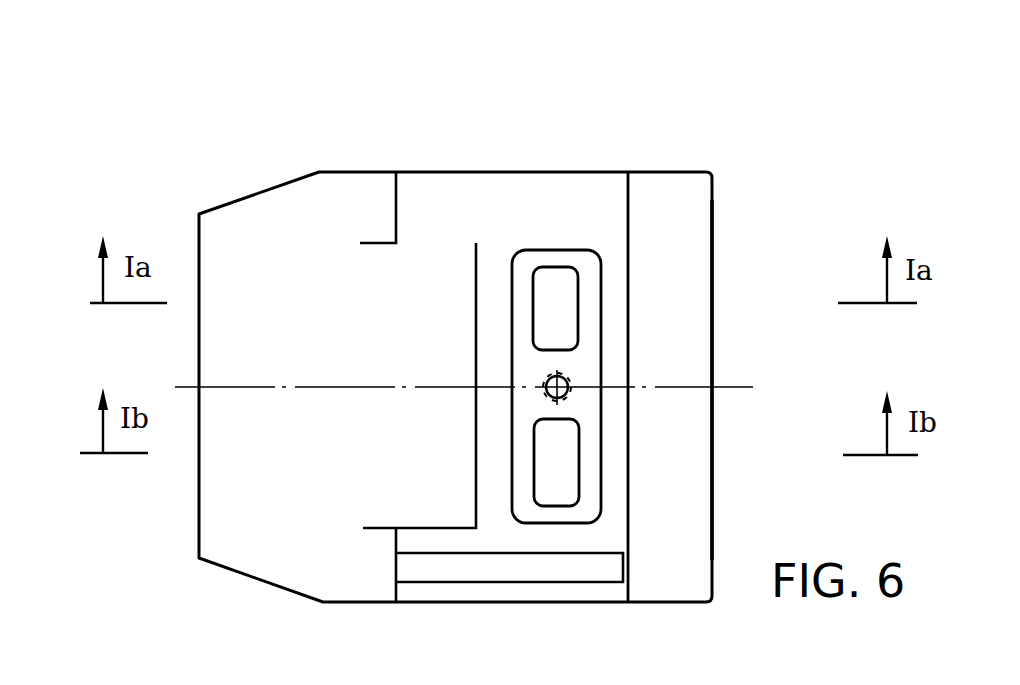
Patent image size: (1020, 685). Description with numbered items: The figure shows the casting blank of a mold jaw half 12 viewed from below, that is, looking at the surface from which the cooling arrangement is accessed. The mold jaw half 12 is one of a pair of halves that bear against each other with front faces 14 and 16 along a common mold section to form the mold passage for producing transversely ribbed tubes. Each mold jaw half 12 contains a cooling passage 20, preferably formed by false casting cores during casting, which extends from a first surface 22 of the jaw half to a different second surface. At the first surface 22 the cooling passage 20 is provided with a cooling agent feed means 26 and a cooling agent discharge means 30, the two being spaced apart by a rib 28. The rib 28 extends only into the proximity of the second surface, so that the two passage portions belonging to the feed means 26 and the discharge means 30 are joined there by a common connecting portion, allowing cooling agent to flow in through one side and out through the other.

The mold jaw half 12 is at (365, 171).
The first surface 22 is at (585, 205).
The front face 14 is at (713, 260).
The front face 16 is at (770, 260).
The cooling passage 20 is at (551, 328).
The cooling agent feed means 26 is at (548, 290).
The rib 28 is at (556, 371).
The cooling agent discharge means 30 is at (552, 457).